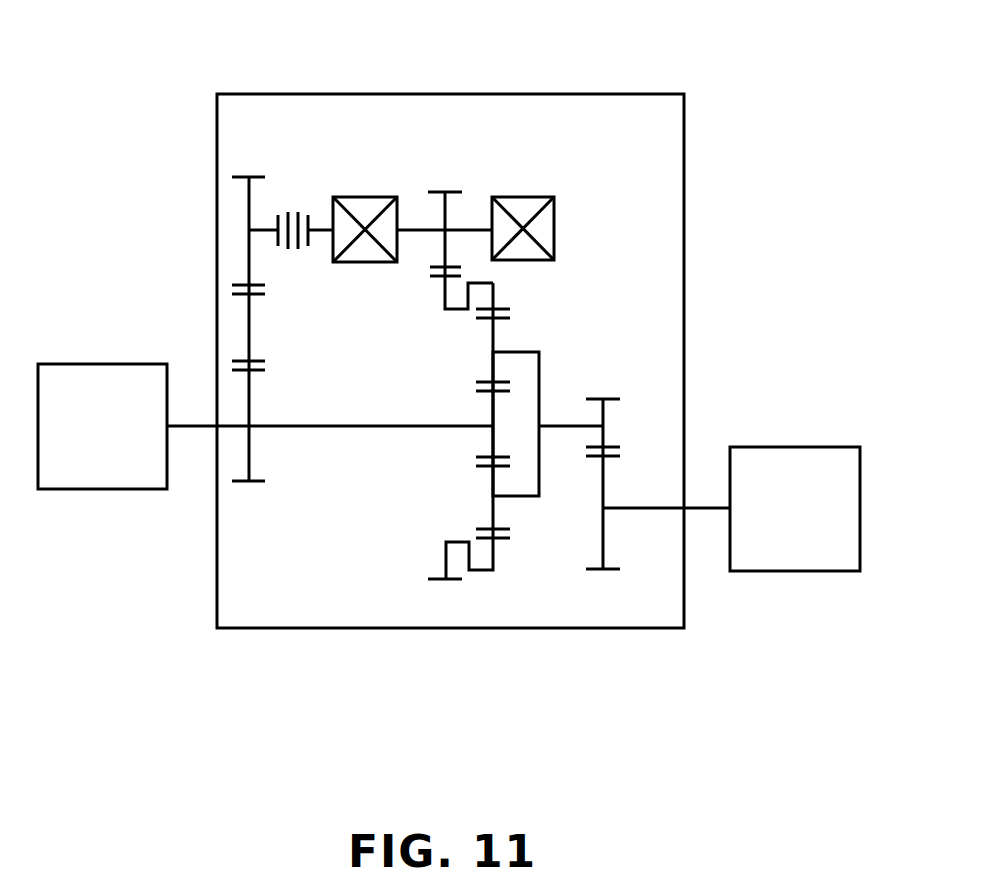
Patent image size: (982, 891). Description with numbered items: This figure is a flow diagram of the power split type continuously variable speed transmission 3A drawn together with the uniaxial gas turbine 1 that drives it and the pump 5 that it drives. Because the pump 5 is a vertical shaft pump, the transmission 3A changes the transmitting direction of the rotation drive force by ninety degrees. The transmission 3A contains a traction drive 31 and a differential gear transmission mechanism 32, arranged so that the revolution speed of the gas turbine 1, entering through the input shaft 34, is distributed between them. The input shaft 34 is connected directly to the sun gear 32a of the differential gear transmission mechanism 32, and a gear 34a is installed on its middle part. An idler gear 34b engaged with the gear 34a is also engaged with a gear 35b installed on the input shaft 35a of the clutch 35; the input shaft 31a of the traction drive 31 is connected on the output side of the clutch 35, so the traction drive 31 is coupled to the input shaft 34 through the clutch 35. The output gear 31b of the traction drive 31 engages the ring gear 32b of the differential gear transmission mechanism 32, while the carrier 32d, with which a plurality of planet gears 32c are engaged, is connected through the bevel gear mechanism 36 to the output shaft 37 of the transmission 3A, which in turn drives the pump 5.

The gas turbine 1 is at (70, 364).
The continuously variable speed transmission 3A is at (590, 94).
The pump 5 is at (795, 447).
The traction drive 31 is at (410, 145).
The input shaft of the traction drive 31a is at (318, 228).
The output gear of the traction drive 31b is at (447, 210).
The differential gear transmission mechanism 32 is at (482, 590).
The sun gear 32a is at (492, 437).
The ring gear 32b is at (493, 301).
The planet gears 32c is at (492, 334).
The carrier 32d is at (540, 356).
The input shaft 34 is at (332, 428).
The gear 34a is at (250, 467).
The idler gear 34b is at (250, 329).
The clutch 35 is at (288, 201).
The input shaft of the clutch 35a is at (262, 228).
The gear 35b is at (247, 195).
The bevel gear mechanism 36 is at (603, 590).
The output shaft 37 is at (710, 508).